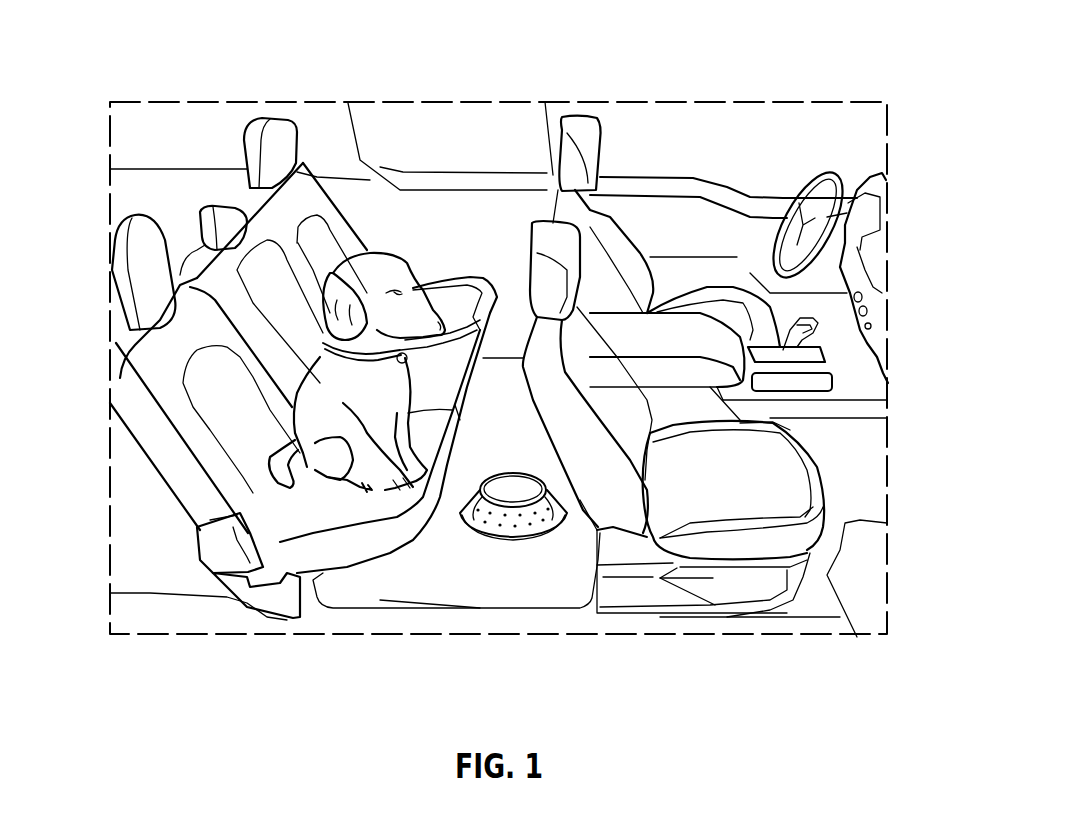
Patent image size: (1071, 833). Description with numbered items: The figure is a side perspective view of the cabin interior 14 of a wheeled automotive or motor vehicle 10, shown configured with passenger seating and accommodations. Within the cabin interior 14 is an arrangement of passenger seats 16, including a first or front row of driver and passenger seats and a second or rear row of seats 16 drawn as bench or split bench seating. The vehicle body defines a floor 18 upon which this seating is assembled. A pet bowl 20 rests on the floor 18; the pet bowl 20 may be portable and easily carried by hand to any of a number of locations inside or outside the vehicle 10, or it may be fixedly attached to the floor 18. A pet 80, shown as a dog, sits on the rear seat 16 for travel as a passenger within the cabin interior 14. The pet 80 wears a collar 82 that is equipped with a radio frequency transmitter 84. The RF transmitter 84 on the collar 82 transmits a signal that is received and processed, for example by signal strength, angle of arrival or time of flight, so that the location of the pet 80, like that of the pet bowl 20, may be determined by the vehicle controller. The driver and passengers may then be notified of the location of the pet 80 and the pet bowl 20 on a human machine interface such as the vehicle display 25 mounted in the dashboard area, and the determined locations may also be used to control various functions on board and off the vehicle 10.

The vehicle 10 is at (782, 100).
The cabin interior 14 is at (505, 230).
The passenger seats 16 is at (307, 523).
The floor 18 is at (490, 587).
The pet bowl 20 is at (478, 527).
The vehicle display 25 is at (862, 250).
The pet 80 is at (407, 253).
The collar 82 is at (345, 357).
The radio frequency (RF) transmitter 84 is at (408, 354).